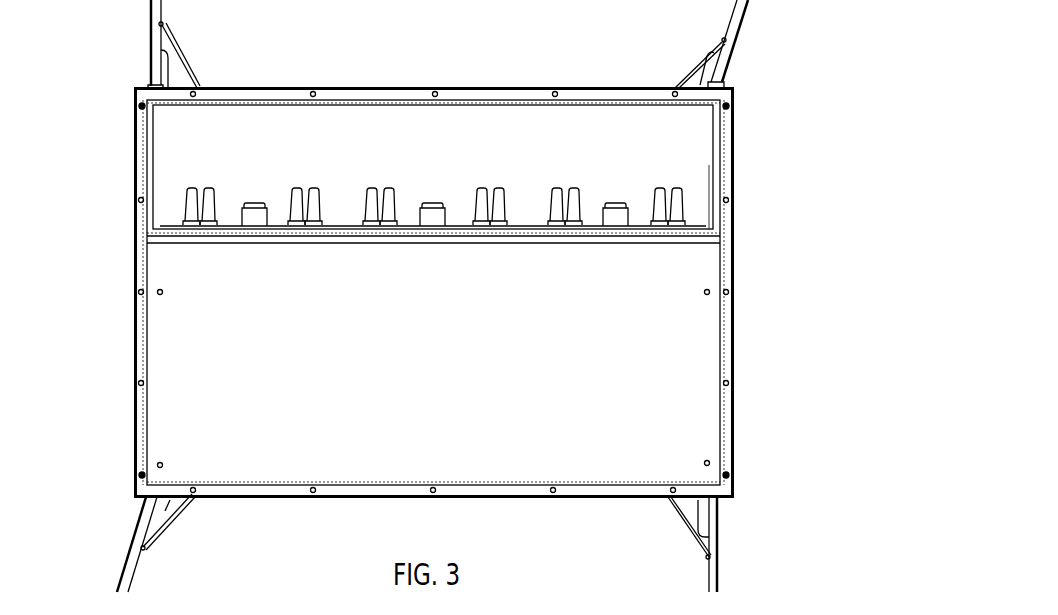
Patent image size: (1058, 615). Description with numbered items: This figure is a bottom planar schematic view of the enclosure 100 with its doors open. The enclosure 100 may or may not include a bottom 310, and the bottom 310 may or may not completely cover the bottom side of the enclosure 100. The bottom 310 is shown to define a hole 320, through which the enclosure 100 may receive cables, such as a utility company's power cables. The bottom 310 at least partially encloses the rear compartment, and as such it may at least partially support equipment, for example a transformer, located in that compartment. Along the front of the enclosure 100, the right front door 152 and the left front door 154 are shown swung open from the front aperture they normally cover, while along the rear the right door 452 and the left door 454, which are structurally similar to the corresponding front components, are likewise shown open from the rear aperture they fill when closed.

The enclosure 100 is at (116, 88).
The right front door 152 is at (738, 22).
The left front door 154 is at (158, 43).
The bottom 310 is at (163, 333).
The hole 320 is at (692, 151).
The right door 452 is at (132, 557).
The left door 454 is at (716, 572).